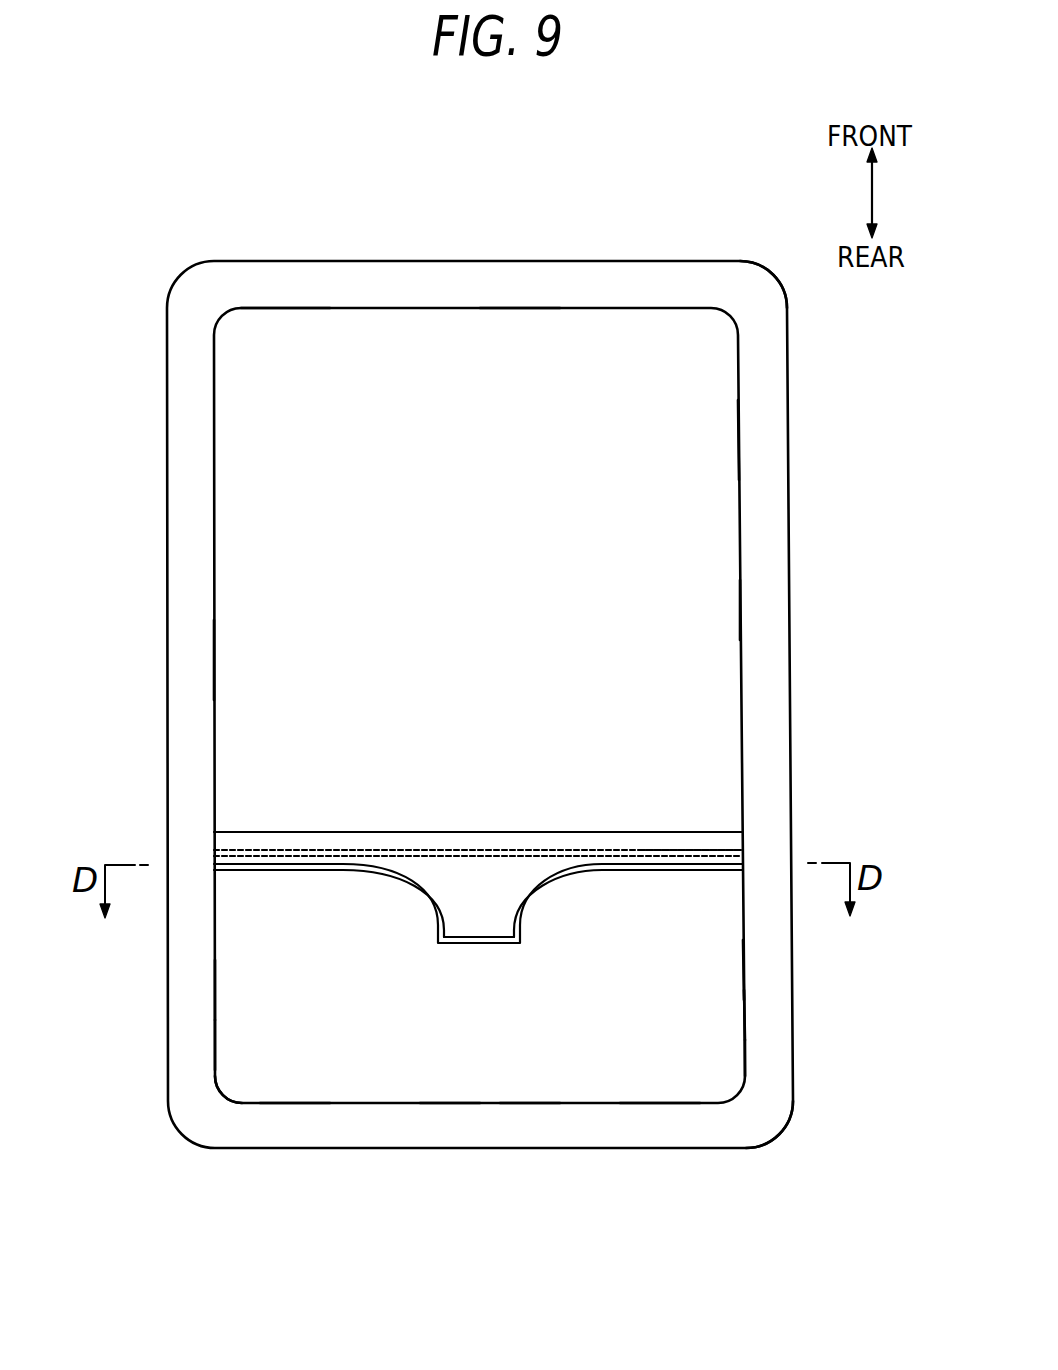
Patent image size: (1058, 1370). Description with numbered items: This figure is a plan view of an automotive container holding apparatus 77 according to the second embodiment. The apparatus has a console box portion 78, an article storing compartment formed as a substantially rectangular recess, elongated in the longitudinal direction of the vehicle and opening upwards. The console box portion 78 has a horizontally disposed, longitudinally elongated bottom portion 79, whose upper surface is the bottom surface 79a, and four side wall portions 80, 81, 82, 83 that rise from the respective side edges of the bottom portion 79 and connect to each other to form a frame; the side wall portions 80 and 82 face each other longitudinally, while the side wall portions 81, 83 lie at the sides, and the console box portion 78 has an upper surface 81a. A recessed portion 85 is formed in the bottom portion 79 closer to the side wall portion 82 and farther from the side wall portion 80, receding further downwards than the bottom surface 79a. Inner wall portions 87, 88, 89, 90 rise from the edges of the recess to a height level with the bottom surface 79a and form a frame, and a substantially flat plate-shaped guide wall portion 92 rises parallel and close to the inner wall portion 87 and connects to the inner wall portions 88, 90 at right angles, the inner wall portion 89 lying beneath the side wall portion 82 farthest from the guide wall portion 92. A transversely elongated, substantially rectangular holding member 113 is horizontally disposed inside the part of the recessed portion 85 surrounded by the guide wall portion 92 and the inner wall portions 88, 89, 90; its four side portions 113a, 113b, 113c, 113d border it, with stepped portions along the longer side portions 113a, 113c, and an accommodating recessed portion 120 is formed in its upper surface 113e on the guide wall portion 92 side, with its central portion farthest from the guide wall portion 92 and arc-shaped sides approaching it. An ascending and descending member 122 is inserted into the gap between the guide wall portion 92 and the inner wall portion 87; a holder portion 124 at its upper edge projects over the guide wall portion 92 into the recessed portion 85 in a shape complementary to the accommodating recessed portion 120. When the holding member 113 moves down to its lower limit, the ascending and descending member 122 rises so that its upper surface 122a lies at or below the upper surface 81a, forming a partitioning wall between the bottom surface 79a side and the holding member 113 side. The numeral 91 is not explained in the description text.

The automotive container holding apparatus 77 is at (736, 236).
The console box portion 78 is at (803, 356).
The bottom portion 79 is at (682, 520).
The bottom surface 79a is at (705, 607).
The side wall portion 80 is at (505, 307).
The side wall portion 81 is at (738, 437).
The upper surface 81a is at (752, 1126).
The side wall portion 82 is at (440, 1101).
The side wall portion 83 is at (222, 665).
The recessed portion 85 is at (294, 1094).
The inner wall portion 87 is at (230, 834).
The inner wall portion 88 is at (730, 964).
The inner wall portion 89 is at (513, 1101).
The inner wall portion 90 is at (232, 1066).
The front left portion 91 is at (296, 327).
The guide wall portion 92 is at (681, 850).
The holding member 113 is at (760, 1058).
The side portion 113a is at (314, 872).
The side portion 113b is at (745, 1015).
The side portion 113c is at (665, 1103).
The side portion 113d is at (215, 1042).
The upper surface 113e is at (280, 985).
The accommodating recessed portion 120 is at (505, 940).
The ascending and descending member 122 is at (573, 820).
The upper surface 122a is at (446, 832).
The holder portion 124 is at (469, 938).